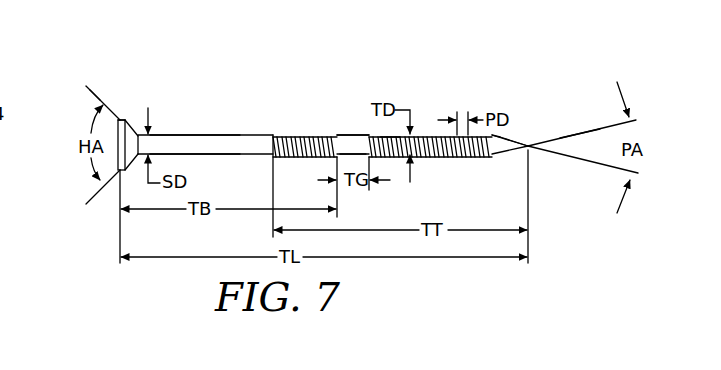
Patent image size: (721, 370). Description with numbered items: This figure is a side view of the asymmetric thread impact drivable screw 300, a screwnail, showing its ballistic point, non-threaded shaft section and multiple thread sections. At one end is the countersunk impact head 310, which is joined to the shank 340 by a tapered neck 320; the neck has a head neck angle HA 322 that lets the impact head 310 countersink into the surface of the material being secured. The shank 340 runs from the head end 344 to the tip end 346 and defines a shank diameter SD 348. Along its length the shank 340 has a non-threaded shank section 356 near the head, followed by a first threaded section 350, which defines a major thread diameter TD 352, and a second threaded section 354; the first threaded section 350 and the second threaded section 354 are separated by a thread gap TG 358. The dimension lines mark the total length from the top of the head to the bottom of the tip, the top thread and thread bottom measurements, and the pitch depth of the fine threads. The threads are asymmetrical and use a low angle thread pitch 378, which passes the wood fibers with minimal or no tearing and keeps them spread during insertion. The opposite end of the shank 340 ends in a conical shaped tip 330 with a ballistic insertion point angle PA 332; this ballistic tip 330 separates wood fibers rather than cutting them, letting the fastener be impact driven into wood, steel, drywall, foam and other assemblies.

The asymmetric thread impact drivable screw 300 is at (246, 133).
The impact head 310 is at (122, 135).
The tapered neck 320 is at (136, 130).
The head neck angle HA 322 is at (83, 150).
The conical shaped tip 330 is at (527, 146).
The ballistic insertion point angle PA 332 is at (645, 145).
The shank 340 is at (343, 135).
The head end 344 is at (119, 127).
The tip end 346 is at (528, 145).
The shank diameter SD 348 is at (190, 179).
The first threaded section 350 is at (431, 134).
The major thread diameter TD 352 is at (390, 98).
The second threaded section 354 is at (312, 135).
The non-threaded shank section 356 is at (194, 135).
The thread gap TG 358 is at (357, 190).
The low angle thread pitch 378 is at (517, 141).